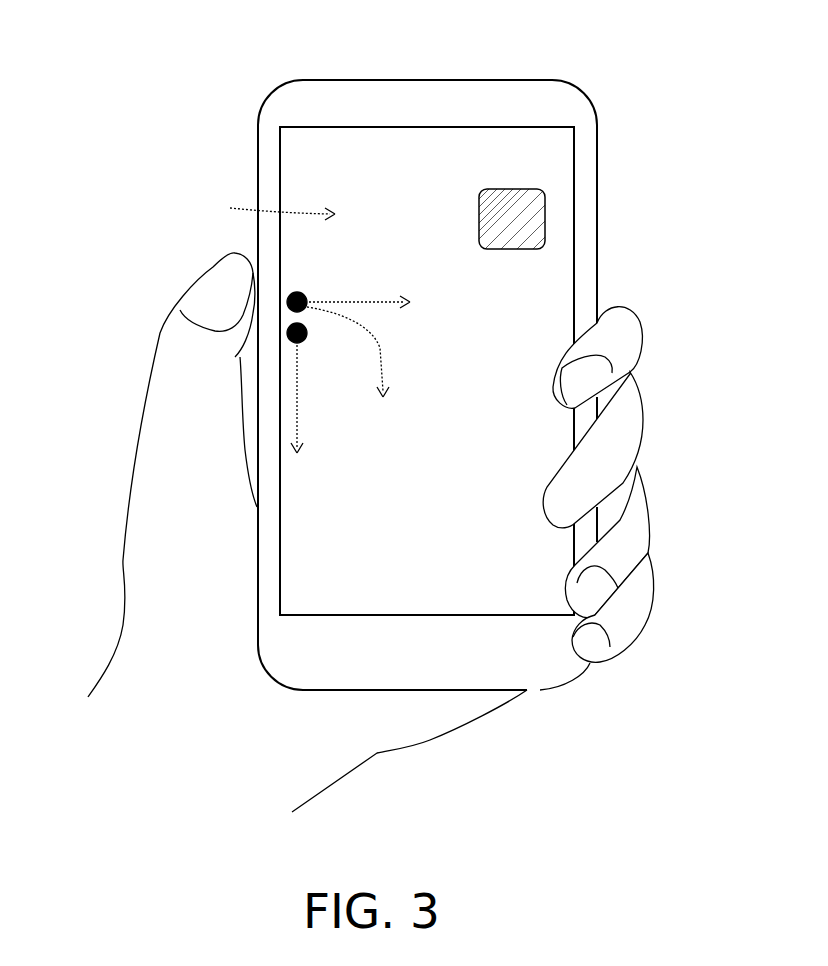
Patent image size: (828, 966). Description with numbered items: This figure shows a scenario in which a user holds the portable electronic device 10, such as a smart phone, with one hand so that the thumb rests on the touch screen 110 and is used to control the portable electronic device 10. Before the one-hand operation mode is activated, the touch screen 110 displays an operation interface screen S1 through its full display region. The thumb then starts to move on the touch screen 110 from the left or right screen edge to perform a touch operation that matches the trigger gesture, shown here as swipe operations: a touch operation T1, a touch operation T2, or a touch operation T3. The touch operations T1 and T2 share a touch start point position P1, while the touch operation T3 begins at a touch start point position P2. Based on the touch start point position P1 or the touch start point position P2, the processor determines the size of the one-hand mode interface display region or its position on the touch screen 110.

The portable electronic device 10 is at (396, 79).
The touch screen 110 is at (489, 126).
The operation interface screen S1 is at (267, 212).
The touch start point position P1 is at (297, 290).
The touch start point position P2 is at (308, 340).
The touch operation T1 is at (371, 298).
The touch operation T2 is at (386, 367).
The touch operation T3 is at (300, 410).